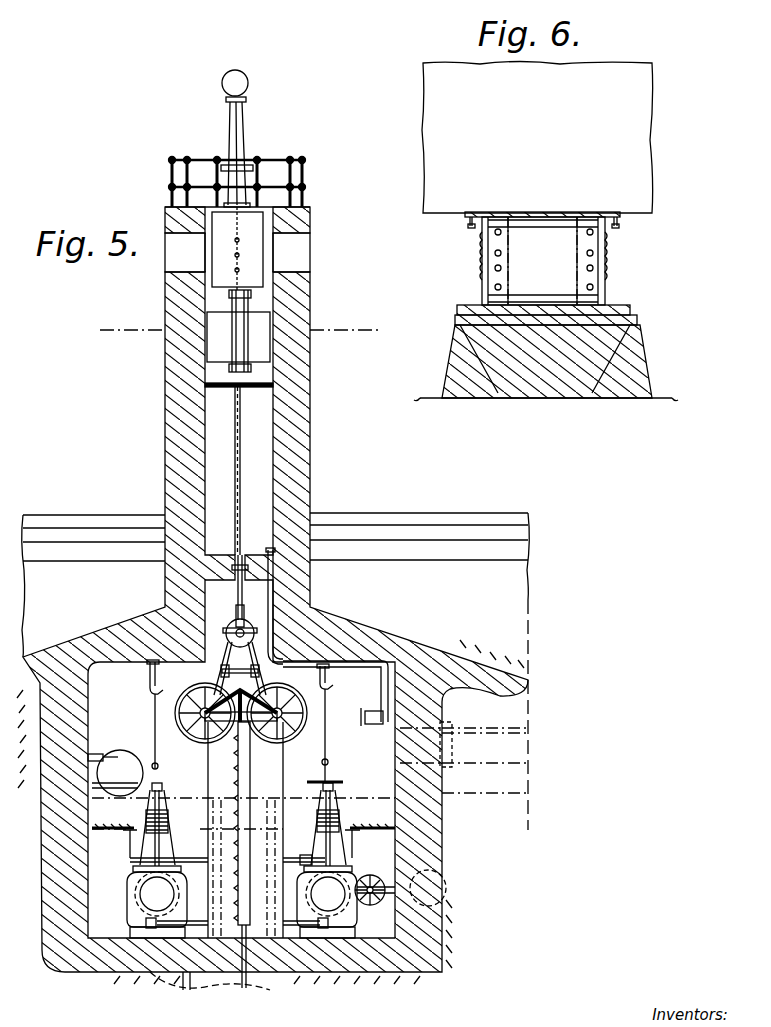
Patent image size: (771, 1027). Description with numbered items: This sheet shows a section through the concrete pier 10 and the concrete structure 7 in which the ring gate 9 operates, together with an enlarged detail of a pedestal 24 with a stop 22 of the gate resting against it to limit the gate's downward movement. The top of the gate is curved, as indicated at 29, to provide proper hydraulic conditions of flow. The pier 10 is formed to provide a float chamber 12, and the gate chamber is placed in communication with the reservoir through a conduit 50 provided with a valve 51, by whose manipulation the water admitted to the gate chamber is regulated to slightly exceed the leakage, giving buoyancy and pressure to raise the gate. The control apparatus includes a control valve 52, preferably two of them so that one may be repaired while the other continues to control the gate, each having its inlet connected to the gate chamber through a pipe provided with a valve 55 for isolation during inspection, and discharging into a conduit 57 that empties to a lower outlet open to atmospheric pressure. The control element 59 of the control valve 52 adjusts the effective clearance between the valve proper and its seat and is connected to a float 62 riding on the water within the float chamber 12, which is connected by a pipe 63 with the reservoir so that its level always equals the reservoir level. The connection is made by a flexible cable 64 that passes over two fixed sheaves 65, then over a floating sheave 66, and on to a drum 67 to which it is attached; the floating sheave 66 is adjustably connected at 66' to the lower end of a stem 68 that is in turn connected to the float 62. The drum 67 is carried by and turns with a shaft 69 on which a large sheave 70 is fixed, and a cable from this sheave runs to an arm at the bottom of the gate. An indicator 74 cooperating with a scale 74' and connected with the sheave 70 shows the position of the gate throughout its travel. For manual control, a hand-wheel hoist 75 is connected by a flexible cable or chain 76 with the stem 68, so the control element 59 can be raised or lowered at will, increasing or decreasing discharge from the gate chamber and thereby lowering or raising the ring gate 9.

In FIG. 5, the concrete structure 7 is at (515, 597).
In FIG. 6, the ring gate 9 is at (537, 138).
In FIG. 5, the concrete pier 10 is at (487, 667).
In FIG. 5, the float chamber 12 is at (265, 410).
In FIG. 6, the stop 22 is at (546, 268).
In FIG. 6, the pedestal 24 is at (642, 352).
In FIG. 5, the curved top portion 29 is at (436, 510).
In FIG. 5, the conduit 50 is at (467, 763).
In FIG. 5, the valve 51 is at (395, 905).
In FIG. 5, the control valve 52 is at (148, 934).
In FIG. 5, the valve 55 is at (167, 858).
In FIG. 5, the conduit 57 is at (248, 972).
In FIG. 5, the control element 59 is at (150, 856).
In FIG. 5, the float 62 is at (262, 323).
In FIG. 5, the pipe 63 is at (273, 593).
In FIG. 5, the flexible cable 64 is at (218, 645).
In FIG. 5, the fixed sheaves 65 is at (150, 683).
In FIG. 5, the floating sheave 66 is at (308, 617).
In FIG. 5, the adjustable connection 66' is at (185, 591).
In FIG. 5, the drum 67 is at (203, 735).
In FIG. 5, the stem 68 is at (243, 483).
In FIG. 5, the shaft 69 is at (200, 714).
In FIG. 5, the large sheave 70 is at (175, 712).
In FIG. 5, the indicator 74 is at (228, 870).
In FIG. 5, the scale 74' is at (243, 802).
In FIG. 5, the hand-wheel hoist 75 is at (230, 170).
In FIG. 5, the flexible cable or chain 76 is at (242, 257).